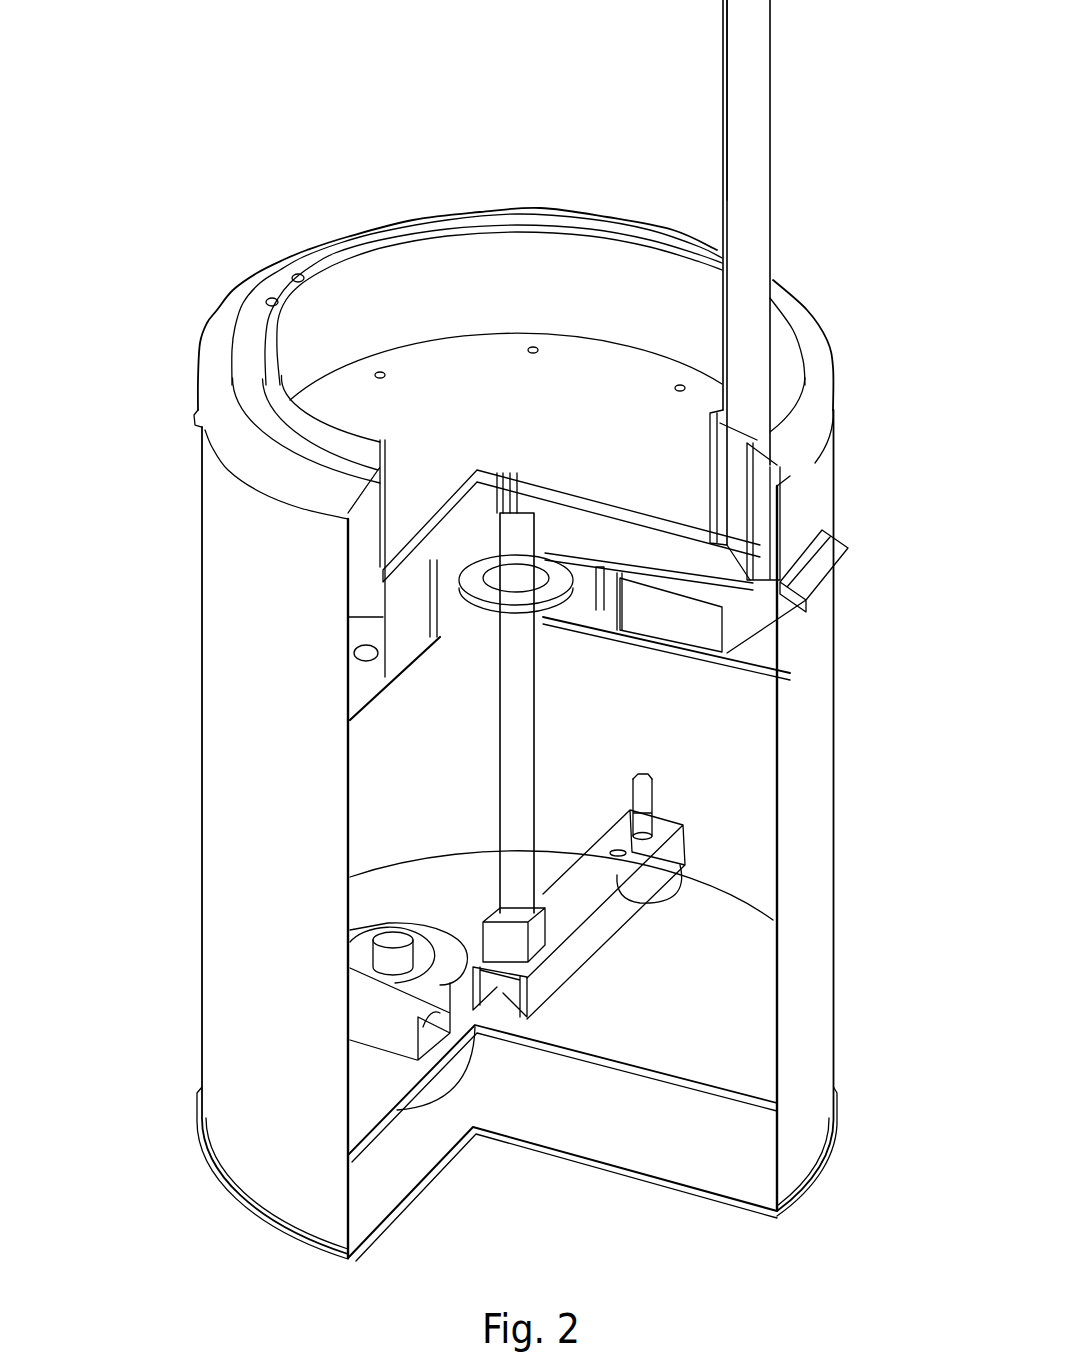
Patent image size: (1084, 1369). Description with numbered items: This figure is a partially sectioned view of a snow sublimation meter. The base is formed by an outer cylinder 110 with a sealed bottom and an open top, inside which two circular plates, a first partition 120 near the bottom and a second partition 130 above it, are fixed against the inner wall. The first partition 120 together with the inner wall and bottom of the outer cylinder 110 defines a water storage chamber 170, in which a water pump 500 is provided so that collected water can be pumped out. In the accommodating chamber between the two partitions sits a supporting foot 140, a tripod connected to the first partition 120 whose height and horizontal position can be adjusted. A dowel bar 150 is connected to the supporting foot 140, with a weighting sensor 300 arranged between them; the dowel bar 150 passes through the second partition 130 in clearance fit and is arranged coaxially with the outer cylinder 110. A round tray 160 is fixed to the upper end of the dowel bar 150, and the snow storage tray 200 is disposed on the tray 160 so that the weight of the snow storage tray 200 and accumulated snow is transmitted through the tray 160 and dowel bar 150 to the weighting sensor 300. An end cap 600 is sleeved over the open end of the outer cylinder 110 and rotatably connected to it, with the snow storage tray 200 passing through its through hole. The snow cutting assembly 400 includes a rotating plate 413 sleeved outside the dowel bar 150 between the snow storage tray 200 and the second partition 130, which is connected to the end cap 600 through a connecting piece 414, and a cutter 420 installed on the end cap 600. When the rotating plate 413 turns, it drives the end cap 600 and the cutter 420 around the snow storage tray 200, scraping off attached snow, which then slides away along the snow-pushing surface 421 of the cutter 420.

The outer cylinder 110 is at (255, 592).
The first partition 120 is at (720, 1097).
The second partition 130 is at (720, 657).
The supporting foot 140 is at (583, 900).
The dowel bar 150 is at (520, 715).
The tray 160 is at (430, 523).
The water storage chamber 170 is at (672, 1127).
The snow storage tray 200 is at (433, 262).
The weighting sensor 300 is at (487, 920).
The snow cutting assembly 400 is at (748, 272).
The rotating plate 413 is at (722, 593).
The connecting piece 414 is at (723, 518).
The cutter 420 is at (772, 177).
The snow-pushing surface 421 is at (753, 78).
The water pump 500 is at (360, 953).
The end cap 600 is at (825, 377).